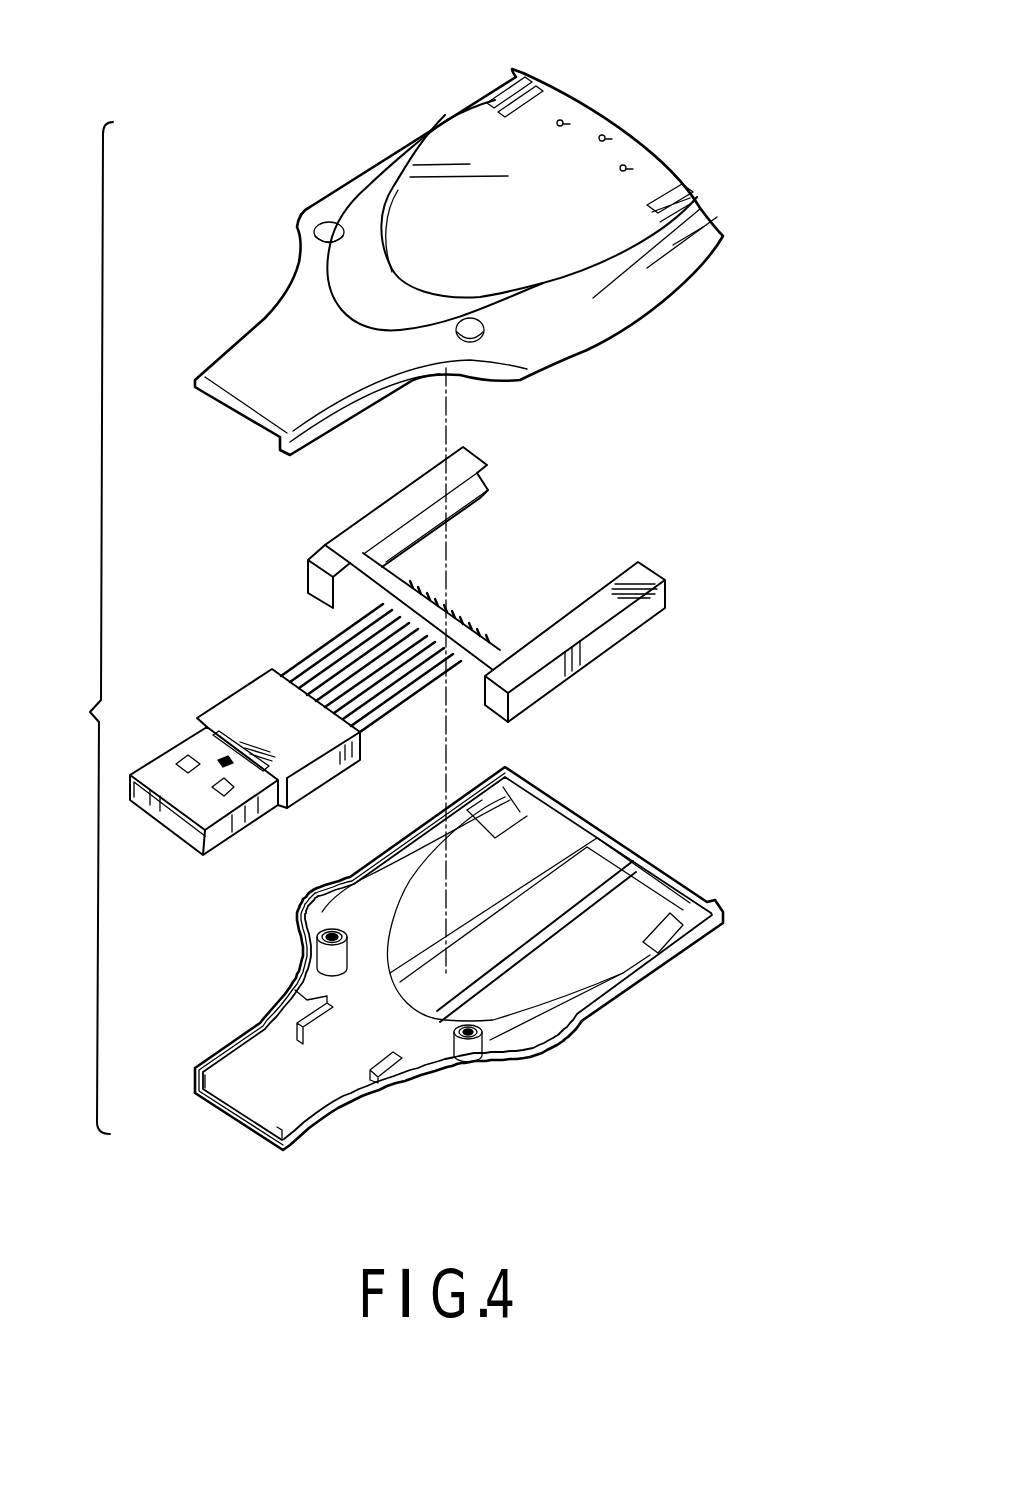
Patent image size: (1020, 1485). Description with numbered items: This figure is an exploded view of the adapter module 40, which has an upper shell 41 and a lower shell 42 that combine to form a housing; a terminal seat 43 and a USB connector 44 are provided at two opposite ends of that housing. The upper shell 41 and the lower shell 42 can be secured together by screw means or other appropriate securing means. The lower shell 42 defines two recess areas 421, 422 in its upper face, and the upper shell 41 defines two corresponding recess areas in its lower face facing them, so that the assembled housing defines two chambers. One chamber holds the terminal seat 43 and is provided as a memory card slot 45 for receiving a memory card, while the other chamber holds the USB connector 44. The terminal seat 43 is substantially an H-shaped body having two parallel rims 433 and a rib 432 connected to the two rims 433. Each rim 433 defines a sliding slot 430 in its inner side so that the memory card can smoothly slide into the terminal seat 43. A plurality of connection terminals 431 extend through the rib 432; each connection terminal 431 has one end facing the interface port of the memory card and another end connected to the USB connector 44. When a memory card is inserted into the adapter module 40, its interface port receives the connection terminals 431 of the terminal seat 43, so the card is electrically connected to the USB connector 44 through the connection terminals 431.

The adapter module 40 is at (330, 110).
The upper shell 41 is at (455, 130).
The lower shell 42 is at (552, 1050).
The recess area 421 is at (650, 903).
The recess area 422 is at (255, 1098).
The terminal seat 43 is at (640, 640).
The sliding slot 430 is at (457, 502).
The connection terminals 431 is at (393, 697).
The rib 432 is at (498, 640).
The rims 433 is at (655, 566).
The USB connector 44 is at (230, 708).
The memory card slot 45 is at (617, 857).